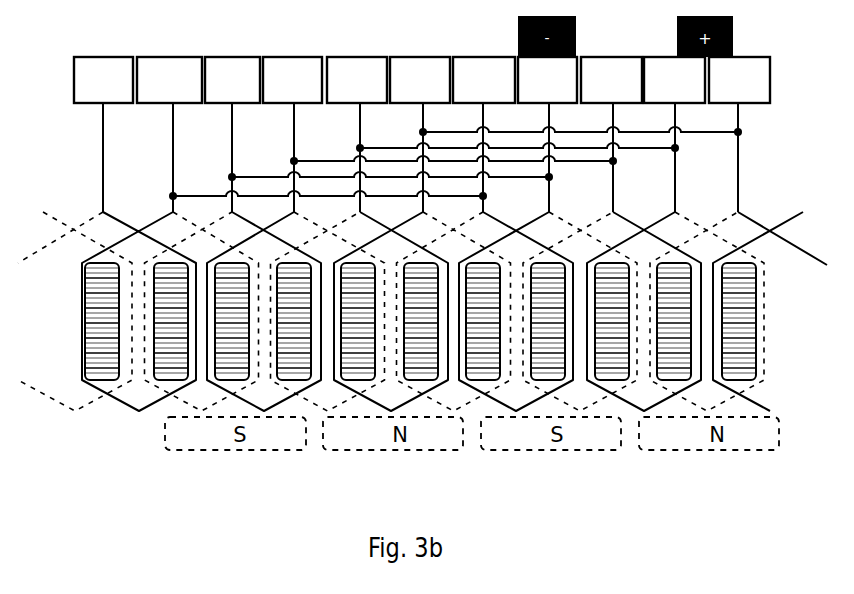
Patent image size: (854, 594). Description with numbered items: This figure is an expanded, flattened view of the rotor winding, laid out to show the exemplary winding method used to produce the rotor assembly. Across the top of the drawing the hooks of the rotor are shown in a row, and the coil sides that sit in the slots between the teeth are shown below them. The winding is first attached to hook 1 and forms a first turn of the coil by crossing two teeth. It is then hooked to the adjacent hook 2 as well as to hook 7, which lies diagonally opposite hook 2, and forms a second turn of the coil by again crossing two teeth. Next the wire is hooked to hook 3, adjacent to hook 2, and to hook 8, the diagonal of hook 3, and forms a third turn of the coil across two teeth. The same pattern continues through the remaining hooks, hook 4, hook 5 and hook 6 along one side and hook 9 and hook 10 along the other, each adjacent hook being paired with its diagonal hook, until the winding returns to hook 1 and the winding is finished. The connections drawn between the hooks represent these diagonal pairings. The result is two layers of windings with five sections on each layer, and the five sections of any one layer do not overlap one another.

The hook 1 is at (422, 80).
The hook 2 is at (674, 80).
The hook 3 is at (611, 80).
The hook 4 is at (547, 80).
The hook 5 is at (484, 80).
The hook 6 is at (420, 80).
The hook 7 is at (357, 80).
The hook 8 is at (292, 80).
The hook 9 is at (232, 80).
The hook 10 is at (169, 80).